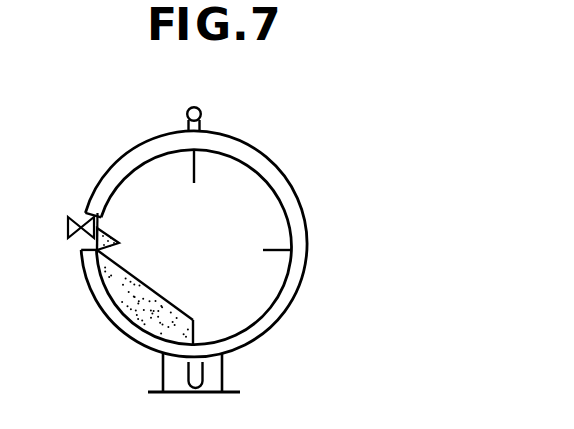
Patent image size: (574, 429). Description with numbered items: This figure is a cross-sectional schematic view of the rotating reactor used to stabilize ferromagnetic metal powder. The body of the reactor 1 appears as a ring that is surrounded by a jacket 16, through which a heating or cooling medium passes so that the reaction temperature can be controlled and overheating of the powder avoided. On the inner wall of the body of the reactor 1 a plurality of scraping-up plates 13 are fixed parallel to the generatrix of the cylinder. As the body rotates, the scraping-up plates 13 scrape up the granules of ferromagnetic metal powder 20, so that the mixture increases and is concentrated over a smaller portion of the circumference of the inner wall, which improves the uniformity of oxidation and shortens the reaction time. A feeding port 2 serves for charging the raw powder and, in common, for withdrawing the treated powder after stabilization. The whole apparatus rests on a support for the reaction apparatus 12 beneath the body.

The body of the reactor 1 is at (291, 222).
The feeding port 2 is at (68, 228).
The support for the reaction apparatus 12 is at (222, 378).
The scraping-up plate 13 is at (195, 167).
The jacket 16 is at (281, 172).
The granules of ferromagnetic metal powder 20 is at (117, 237).